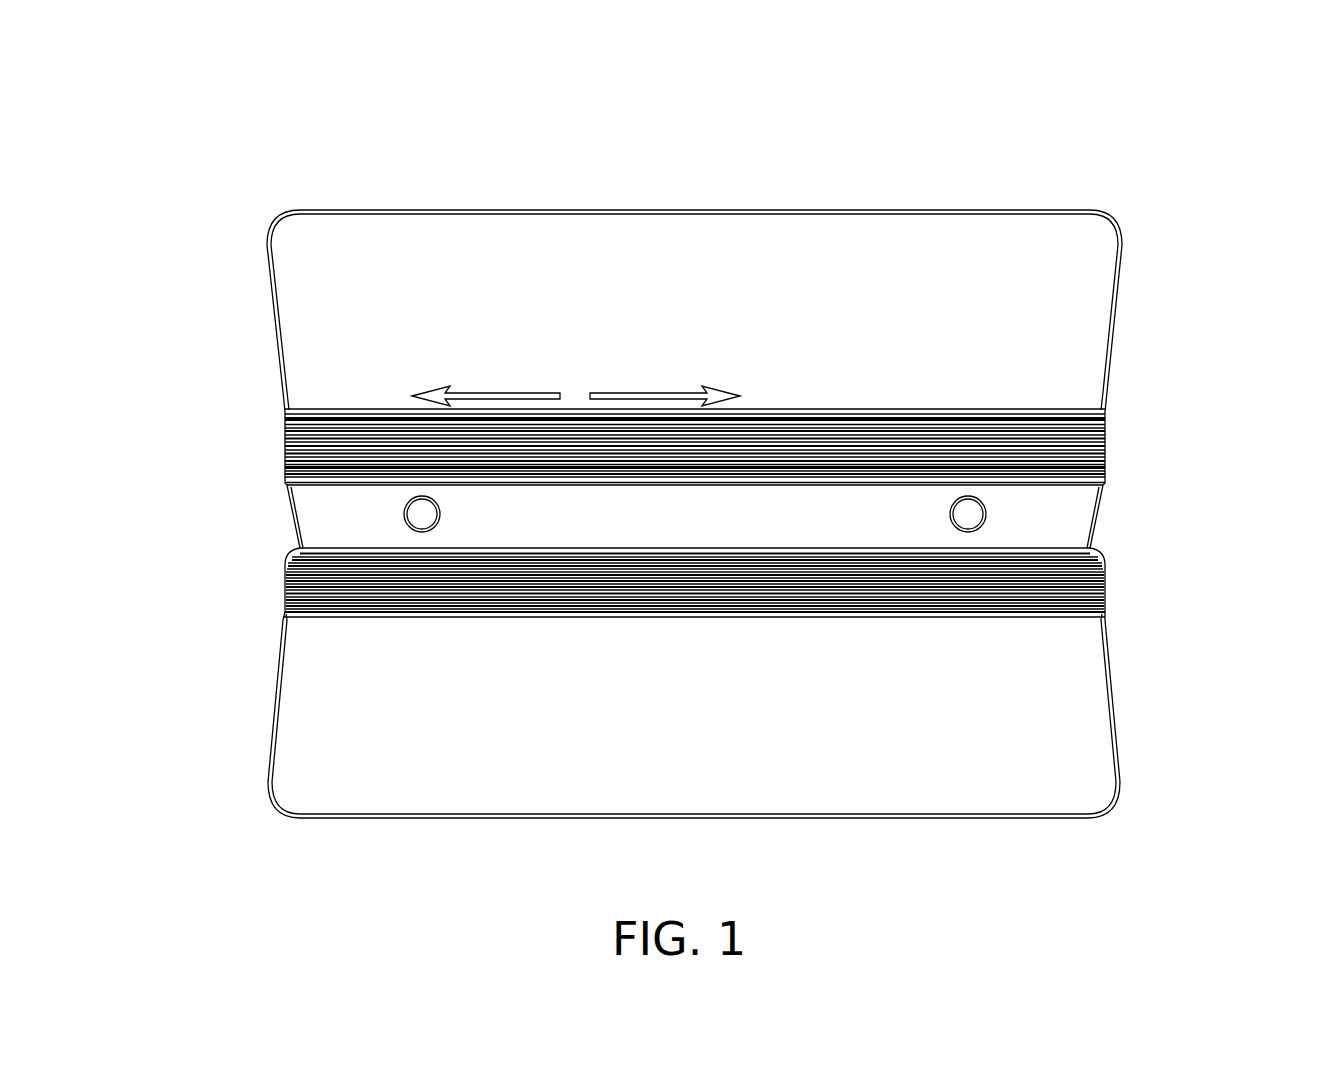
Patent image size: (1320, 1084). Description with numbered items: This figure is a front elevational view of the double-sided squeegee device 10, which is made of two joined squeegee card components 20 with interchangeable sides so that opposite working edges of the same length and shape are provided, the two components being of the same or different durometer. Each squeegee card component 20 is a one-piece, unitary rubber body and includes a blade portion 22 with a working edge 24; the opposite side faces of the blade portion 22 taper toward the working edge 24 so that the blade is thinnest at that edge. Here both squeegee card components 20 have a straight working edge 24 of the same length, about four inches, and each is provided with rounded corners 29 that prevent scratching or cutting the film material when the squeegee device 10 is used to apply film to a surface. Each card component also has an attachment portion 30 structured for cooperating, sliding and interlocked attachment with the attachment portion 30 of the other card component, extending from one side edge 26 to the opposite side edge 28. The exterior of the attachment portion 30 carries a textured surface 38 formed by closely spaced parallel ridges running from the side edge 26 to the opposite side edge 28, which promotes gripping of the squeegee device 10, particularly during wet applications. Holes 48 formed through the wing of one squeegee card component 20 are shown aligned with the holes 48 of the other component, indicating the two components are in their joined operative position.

The squeegee device 10 is at (952, 172).
The squeegee card component 20 is at (1120, 303).
The blade portion 22 is at (1047, 296).
The working edge 24 is at (648, 207).
The side edge 26 is at (278, 330).
The opposite side edge 28 is at (1112, 352).
The rounded corners 29 is at (280, 218).
The attachment portion 30 is at (1045, 524).
The textured surface 38 is at (1070, 456).
The holes 48 is at (432, 513).